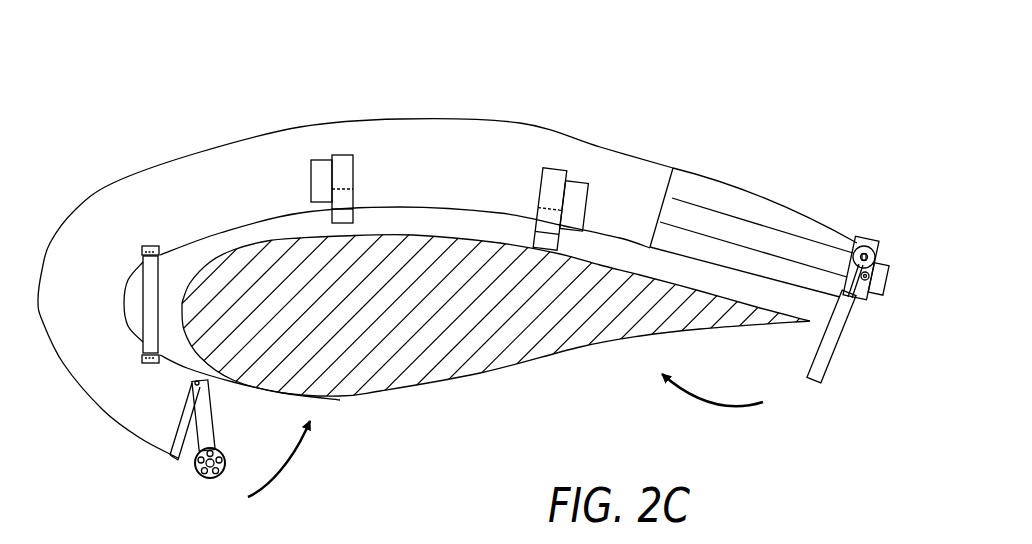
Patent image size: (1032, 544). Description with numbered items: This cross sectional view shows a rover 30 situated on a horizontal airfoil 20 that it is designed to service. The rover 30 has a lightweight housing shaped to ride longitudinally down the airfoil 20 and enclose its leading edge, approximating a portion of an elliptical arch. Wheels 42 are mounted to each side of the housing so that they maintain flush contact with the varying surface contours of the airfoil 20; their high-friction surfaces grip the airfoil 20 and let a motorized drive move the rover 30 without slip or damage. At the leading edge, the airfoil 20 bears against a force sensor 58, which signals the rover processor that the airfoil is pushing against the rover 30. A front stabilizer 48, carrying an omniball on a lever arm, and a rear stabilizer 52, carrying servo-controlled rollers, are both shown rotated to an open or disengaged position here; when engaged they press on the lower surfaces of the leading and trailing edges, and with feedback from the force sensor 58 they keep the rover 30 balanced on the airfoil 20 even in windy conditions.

The rover 30 is at (700, 130).
The horizontal airfoil 20 is at (497, 368).
The wheels 42 is at (533, 213).
The force sensor 58 is at (148, 304).
The front stabilizer 48 is at (208, 423).
The rear stabilizer 52 is at (843, 317).